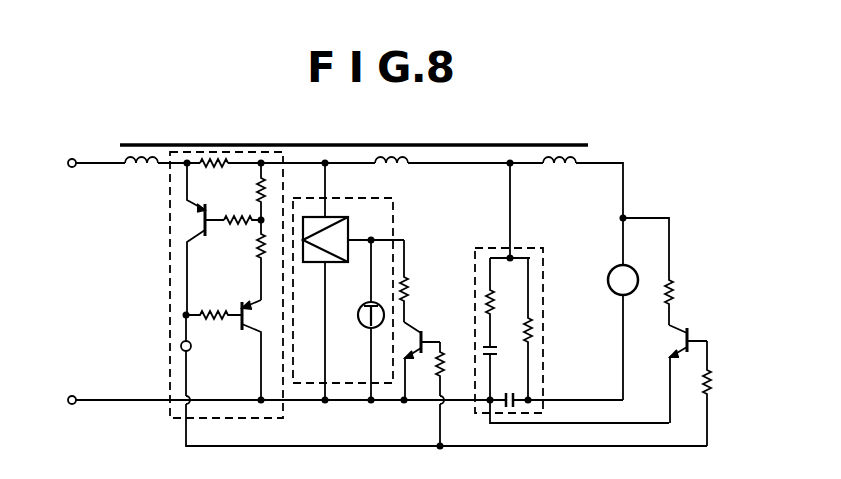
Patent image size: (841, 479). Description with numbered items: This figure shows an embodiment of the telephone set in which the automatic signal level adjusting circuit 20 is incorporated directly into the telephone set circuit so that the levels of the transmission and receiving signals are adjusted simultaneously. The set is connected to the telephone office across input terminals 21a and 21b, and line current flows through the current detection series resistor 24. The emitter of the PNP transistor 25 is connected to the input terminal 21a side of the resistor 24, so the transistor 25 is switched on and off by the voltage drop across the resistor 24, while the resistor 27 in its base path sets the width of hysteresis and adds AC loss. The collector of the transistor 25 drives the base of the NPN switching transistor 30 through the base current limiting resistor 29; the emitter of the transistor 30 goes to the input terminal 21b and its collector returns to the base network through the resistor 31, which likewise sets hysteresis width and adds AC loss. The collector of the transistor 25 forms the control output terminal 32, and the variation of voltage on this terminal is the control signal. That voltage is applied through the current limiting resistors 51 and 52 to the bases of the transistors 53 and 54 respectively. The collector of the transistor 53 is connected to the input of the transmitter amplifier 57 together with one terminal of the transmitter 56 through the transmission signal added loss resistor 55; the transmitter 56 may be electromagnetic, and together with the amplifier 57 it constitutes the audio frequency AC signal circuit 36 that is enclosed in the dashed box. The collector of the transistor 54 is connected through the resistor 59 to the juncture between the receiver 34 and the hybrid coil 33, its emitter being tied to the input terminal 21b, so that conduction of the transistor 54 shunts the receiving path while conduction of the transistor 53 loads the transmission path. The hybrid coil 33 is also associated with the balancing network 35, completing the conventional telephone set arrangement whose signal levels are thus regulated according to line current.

The input terminal 21a is at (80, 148).
The input terminal 21b is at (80, 385).
The hybrid coil 33 is at (485, 145).
The current detection series resistor 24 is at (215, 160).
The automatic signal level adjusting circuit 20 is at (168, 302).
The PNP transistor 25 is at (197, 212).
The resistor for setting hysteresis width and adding AC loss 27 is at (248, 191).
The resistor for setting hysteresis width and adding AC loss 31 is at (248, 260).
The base current limiting resistor 29 is at (214, 296).
The NPN switching transistor 30 is at (259, 348).
The control output terminal 32 is at (198, 340).
The audio frequency AC signal circuit 36 is at (393, 210).
The transmitter amplifier 57 is at (360, 215).
The transmitter 56 is at (360, 320).
The transmission signal added loss resistor 55 is at (416, 281).
The transistor 53 is at (422, 346).
The current limiting resistor 51 is at (452, 394).
The balancing network 35 is at (532, 250).
The receiver 34 is at (611, 331).
The resistor 59 is at (661, 271).
The transistor 54 is at (678, 370).
The current limiting resistor 52 is at (719, 393).